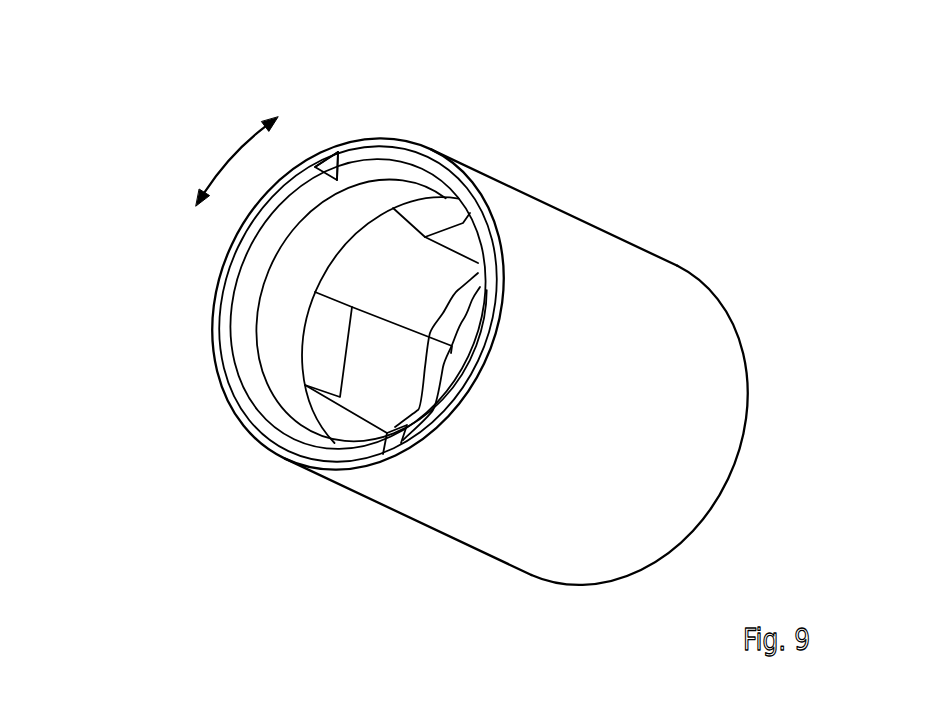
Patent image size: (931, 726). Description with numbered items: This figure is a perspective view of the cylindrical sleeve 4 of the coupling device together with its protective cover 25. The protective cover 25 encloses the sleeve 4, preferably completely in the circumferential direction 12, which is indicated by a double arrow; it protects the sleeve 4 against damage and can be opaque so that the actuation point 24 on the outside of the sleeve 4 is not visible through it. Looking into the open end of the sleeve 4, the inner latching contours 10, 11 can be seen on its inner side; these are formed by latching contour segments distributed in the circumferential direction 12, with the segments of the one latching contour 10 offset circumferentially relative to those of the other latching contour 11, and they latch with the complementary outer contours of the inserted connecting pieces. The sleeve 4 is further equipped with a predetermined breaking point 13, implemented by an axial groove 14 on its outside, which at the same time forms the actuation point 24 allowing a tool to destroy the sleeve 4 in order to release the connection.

The sleeve 4 is at (236, 272).
The inner latching contour 10 is at (437, 212).
The inner latching contour 11 is at (468, 316).
The circumferential direction 12 is at (228, 150).
The predetermined breaking point 13 is at (328, 160).
The axial groove 14 is at (326, 159).
The actuation point 24 is at (337, 166).
The protective cover 25 is at (712, 348).